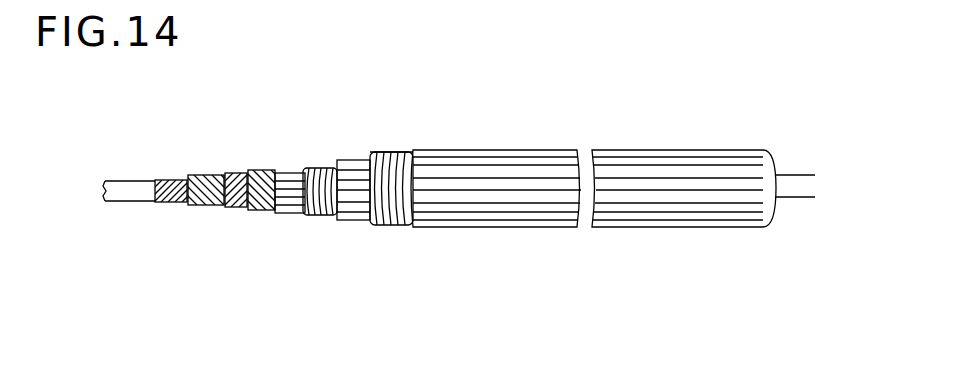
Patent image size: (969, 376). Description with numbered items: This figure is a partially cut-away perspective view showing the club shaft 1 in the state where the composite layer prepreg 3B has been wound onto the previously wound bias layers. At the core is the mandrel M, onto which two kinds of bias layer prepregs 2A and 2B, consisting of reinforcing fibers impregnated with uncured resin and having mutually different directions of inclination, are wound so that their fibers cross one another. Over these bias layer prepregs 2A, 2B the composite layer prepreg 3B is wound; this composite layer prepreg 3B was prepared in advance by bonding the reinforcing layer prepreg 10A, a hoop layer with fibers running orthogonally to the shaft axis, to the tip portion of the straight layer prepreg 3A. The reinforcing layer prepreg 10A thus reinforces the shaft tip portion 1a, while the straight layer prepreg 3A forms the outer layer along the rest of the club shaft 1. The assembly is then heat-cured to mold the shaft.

The club shaft 1 is at (656, 136).
The shaft tip portion 1a is at (331, 153).
The bias layer prepreg 2A is at (197, 207).
The bias layer prepreg 2B is at (230, 164).
The straight layer prepreg 3A is at (347, 221).
The composite layer prepreg 3B is at (409, 152).
The reinforcing layer prepreg 10A is at (310, 216).
The mandrel M is at (122, 199).